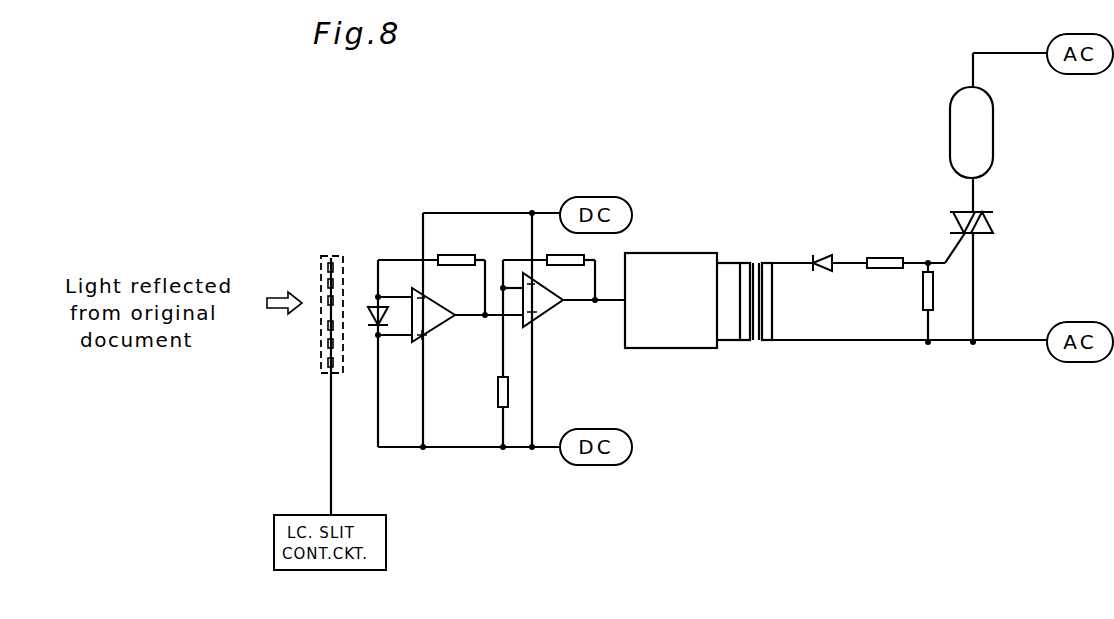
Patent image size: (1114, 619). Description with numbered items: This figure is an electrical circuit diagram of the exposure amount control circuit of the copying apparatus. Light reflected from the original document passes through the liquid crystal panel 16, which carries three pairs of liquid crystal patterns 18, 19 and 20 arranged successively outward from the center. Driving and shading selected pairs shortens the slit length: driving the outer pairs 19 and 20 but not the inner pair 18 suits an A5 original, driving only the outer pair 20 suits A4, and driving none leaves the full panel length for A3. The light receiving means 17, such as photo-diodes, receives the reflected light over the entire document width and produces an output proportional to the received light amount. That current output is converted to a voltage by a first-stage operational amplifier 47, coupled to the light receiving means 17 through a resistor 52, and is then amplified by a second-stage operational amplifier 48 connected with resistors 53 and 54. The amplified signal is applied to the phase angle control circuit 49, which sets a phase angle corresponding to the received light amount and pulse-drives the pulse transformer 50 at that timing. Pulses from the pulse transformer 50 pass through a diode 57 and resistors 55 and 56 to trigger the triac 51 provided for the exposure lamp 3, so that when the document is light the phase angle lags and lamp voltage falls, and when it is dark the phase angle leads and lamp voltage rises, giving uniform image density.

The exposure lamp 3 is at (1005, 140).
The liquid crystal panel 16 is at (332, 250).
The light receiving means 17 is at (365, 313).
The liquid crystal patterns 18 is at (333, 299).
The liquid crystal patterns 19 is at (327, 283).
The liquid crystal patterns 20 is at (326, 266).
The operational amplifier 47 is at (438, 328).
The operational amplifier 48 is at (550, 314).
The phase angle control circuit 49 is at (680, 252).
The pulse transformer 50 is at (759, 250).
The triac 51 is at (999, 221).
The resistor 52 is at (460, 255).
The resistor 53 is at (498, 392).
The resistor 54 is at (575, 253).
The resistor 55 is at (885, 257).
The resistor 56 is at (923, 287).
The diode 57 is at (827, 250).